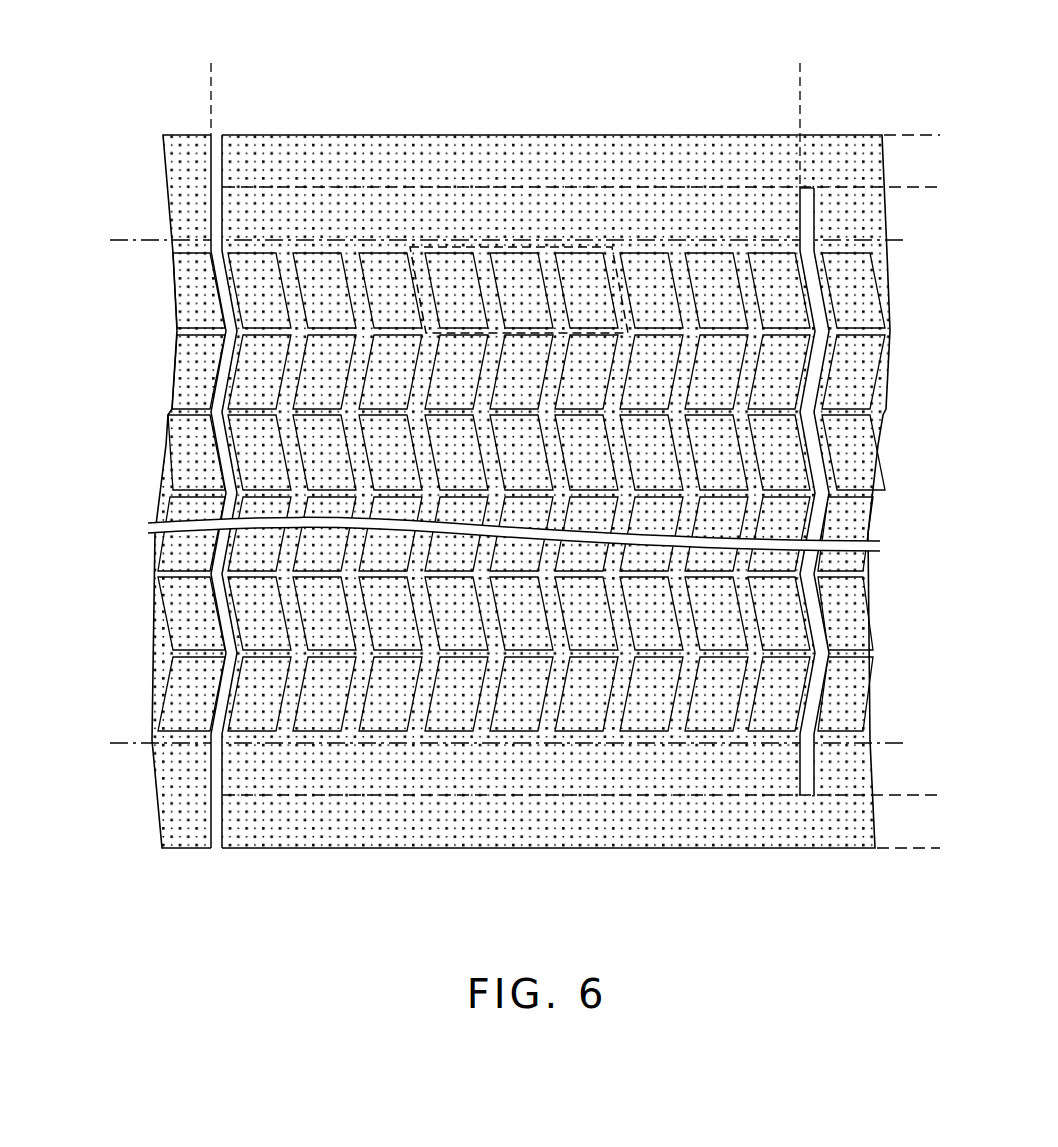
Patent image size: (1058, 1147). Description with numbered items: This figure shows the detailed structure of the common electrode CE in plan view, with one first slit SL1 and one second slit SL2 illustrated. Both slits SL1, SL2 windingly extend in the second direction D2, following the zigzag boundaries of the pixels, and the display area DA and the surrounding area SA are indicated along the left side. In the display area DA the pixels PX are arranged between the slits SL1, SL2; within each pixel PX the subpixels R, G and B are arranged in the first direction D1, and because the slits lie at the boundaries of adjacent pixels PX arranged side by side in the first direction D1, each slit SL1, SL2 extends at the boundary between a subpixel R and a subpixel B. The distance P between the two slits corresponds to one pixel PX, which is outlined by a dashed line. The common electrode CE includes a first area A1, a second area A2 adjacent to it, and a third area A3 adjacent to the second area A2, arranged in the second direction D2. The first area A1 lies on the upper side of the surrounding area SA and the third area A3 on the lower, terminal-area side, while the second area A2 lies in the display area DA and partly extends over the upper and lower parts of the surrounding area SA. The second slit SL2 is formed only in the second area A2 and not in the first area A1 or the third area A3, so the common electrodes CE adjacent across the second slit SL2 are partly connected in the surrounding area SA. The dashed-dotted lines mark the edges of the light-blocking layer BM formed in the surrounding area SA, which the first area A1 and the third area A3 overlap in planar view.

The surrounding area SA is at (140, 240).
The display area DA is at (140, 240).
The light-blocking layer BM is at (121, 242).
The common electrode CE is at (175, 850).
The first slit SL1 is at (215, 849).
The second slit SL2 is at (800, 796).
The pitch between slits P is at (800, 75).
The pixel PX is at (540, 247).
The first area A1 is at (918, 135).
The second area A2 is at (918, 187).
The third area A3 is at (918, 795).
The first direction D1 is at (45, 17).
The second direction D2 is at (79, 0).
The subpixel SPR R is at (556, 492).
The subpixel SPG G is at (520, 492).
The subpixel SPB B is at (484, 492).